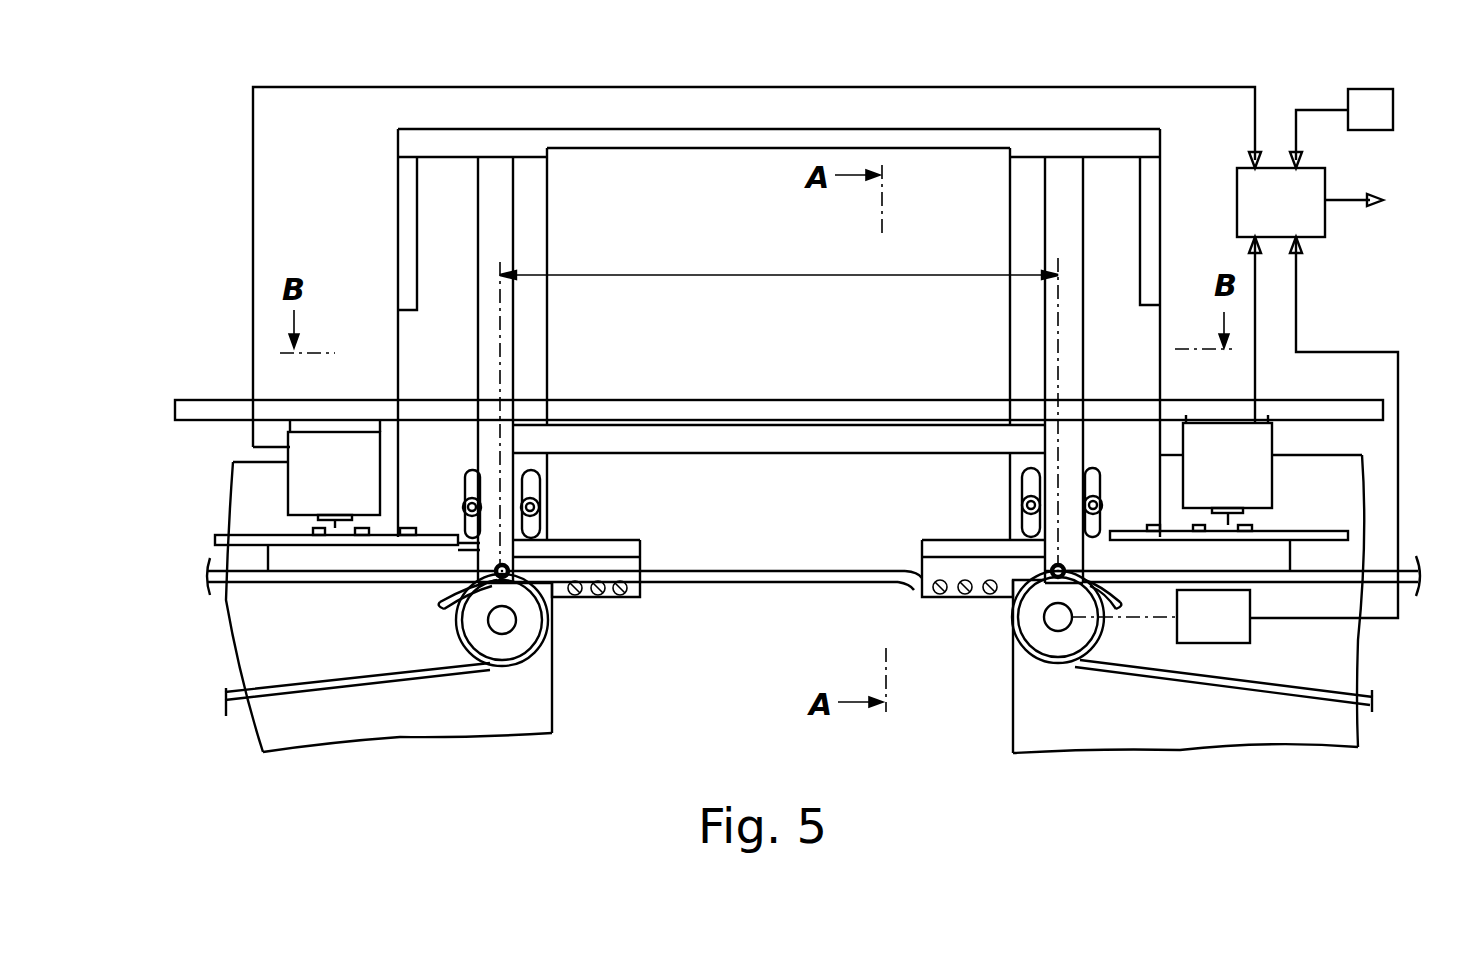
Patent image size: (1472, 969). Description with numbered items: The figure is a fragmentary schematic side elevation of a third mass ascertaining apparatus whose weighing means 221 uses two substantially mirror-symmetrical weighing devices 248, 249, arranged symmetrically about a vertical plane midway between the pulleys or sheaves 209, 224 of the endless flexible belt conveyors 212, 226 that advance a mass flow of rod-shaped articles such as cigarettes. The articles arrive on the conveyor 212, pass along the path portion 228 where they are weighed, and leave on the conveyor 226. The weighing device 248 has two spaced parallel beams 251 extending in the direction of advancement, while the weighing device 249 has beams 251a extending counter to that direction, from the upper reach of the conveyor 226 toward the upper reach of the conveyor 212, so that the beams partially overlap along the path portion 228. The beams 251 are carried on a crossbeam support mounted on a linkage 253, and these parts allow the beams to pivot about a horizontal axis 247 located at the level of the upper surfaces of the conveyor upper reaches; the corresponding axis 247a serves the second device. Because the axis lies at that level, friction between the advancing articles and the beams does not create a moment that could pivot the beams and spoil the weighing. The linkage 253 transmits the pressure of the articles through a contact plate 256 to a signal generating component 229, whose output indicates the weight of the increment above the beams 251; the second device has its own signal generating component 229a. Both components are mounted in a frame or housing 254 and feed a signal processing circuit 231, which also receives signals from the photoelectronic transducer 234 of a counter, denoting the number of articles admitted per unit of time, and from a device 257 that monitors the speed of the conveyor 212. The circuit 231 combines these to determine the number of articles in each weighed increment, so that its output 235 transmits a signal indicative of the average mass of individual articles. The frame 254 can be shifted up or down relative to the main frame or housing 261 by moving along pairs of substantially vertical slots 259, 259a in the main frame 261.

The pulley 209 is at (1055, 638).
The belt conveyor 212 is at (1277, 690).
The weighing means 221 is at (714, 654).
The pulley 224 is at (512, 647).
The belt conveyor 226 is at (375, 682).
The path portion 228 is at (748, 272).
The signal generating component 229 is at (1258, 477).
The signal generating component 229a is at (300, 485).
The signal processing circuit 231 is at (1315, 212).
The photoelectronic transducer 234 is at (1370, 100).
The output 235 is at (1340, 197).
The horizontal axis 247 is at (1053, 590).
The horizontal axis 247a is at (507, 594).
The weighing device 248 is at (951, 470).
The weighing device 249 is at (612, 470).
The beams 251 is at (918, 575).
The beams 251a is at (797, 575).
The linkage 253 is at (945, 547).
The frame 254 is at (1055, 225).
The contact plate 256 is at (1327, 534).
The speed measuring device 257 is at (1220, 630).
The vertical slots 259 is at (1088, 478).
The vertical slots 259a is at (477, 480).
The main frame 261 is at (518, 702).